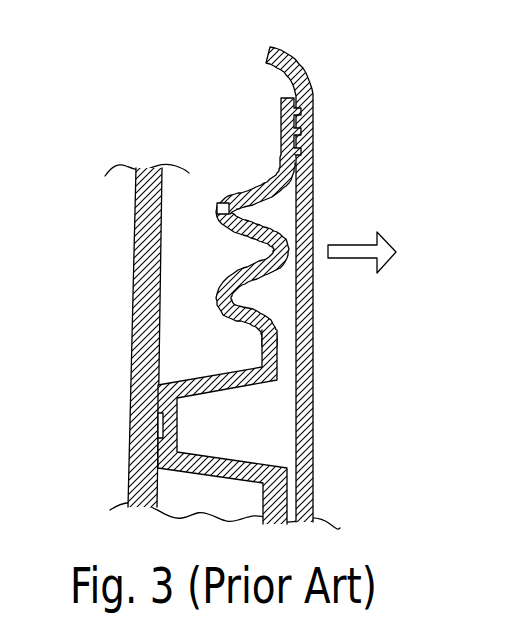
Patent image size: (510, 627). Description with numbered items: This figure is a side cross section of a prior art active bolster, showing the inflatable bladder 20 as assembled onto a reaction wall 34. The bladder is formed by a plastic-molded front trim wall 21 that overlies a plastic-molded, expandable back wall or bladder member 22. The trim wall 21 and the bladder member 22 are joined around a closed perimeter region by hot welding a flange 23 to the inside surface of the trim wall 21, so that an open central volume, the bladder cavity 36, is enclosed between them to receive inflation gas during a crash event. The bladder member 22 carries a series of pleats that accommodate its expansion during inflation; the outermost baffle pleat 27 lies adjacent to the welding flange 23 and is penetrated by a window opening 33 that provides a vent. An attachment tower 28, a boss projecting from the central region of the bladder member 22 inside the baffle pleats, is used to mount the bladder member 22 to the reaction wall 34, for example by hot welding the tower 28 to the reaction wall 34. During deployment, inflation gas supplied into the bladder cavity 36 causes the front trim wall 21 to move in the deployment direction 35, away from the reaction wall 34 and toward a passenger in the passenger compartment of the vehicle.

The inflatable bladder 20 is at (195, 99).
The front trim wall 21 is at (315, 178).
The bladder member 22 is at (236, 248).
The welding flange 23 is at (281, 128).
The outermost baffle pleat 27 is at (247, 186).
The attachment tower 28 is at (208, 374).
The window opening 33 is at (217, 208).
The reaction wall 34 is at (133, 280).
The deployment direction 35 is at (353, 244).
The bladder cavity 36 is at (277, 298).